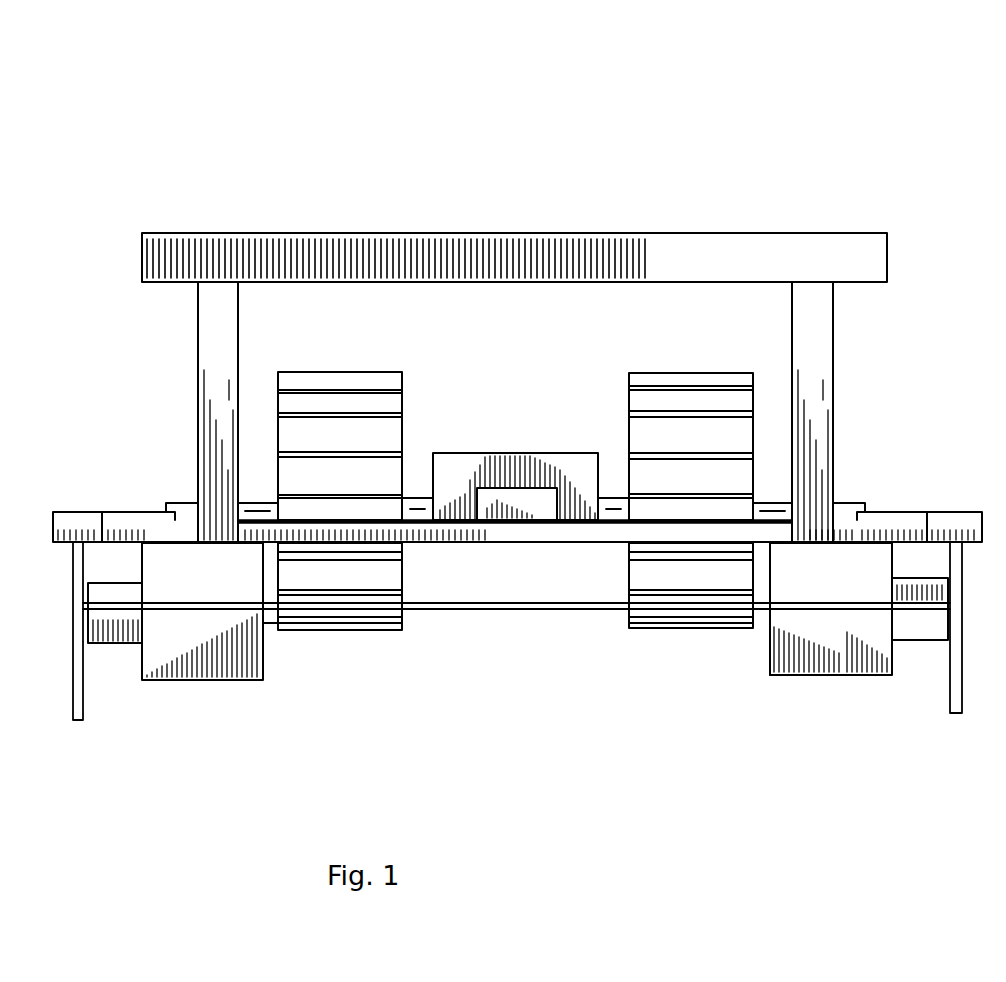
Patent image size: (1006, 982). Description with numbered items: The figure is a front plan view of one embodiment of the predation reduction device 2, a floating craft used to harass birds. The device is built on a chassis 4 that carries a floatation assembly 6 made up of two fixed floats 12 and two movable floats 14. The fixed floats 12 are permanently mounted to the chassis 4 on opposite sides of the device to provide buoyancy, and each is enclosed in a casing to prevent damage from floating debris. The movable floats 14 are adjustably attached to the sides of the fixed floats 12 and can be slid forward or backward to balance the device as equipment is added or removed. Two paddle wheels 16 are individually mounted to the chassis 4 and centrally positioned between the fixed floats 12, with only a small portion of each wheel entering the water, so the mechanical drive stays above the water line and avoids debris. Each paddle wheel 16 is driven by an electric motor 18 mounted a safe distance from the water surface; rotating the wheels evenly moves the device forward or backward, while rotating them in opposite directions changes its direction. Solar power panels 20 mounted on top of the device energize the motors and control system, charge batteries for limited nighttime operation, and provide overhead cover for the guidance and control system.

The predation reduction device 2 is at (880, 193).
The chassis 4 is at (572, 544).
The floatation assembly 6 is at (883, 702).
The fixed floats 12 is at (222, 680).
The movable floats 14 is at (118, 647).
The paddle wheels 16 is at (690, 373).
The electric motors 18 is at (178, 503).
The solar power panels 20 is at (718, 233).